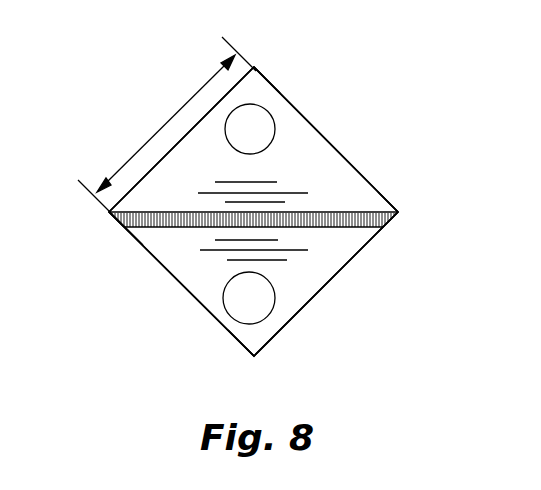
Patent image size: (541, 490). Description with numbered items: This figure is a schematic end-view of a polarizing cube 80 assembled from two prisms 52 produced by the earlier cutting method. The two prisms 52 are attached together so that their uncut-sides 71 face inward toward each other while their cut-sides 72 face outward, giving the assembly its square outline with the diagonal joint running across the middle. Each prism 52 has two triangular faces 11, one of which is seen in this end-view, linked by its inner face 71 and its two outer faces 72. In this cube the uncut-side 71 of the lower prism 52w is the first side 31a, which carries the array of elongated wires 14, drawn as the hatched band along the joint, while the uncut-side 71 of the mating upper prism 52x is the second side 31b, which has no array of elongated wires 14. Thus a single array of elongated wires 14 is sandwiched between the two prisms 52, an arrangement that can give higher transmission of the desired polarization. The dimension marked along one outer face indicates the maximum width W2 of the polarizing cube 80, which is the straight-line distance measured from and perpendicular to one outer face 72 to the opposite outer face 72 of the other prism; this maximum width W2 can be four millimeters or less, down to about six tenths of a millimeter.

The polarizing cube 80 is at (128, 50).
The prism 52 is at (263, 80).
The cut-side (outer face) 72 is at (195, 129).
The maximum width W2 is at (167, 141).
The array of elongated wires 14 is at (179, 212).
The uncut-side (inner face) 71 is at (139, 214).
The triangular face 11 is at (347, 191).
The mating prism 52x is at (250, 129).
The prism with wires 52w is at (249, 298).
The second side 31b is at (410, 186).
The first side 31a is at (380, 223).